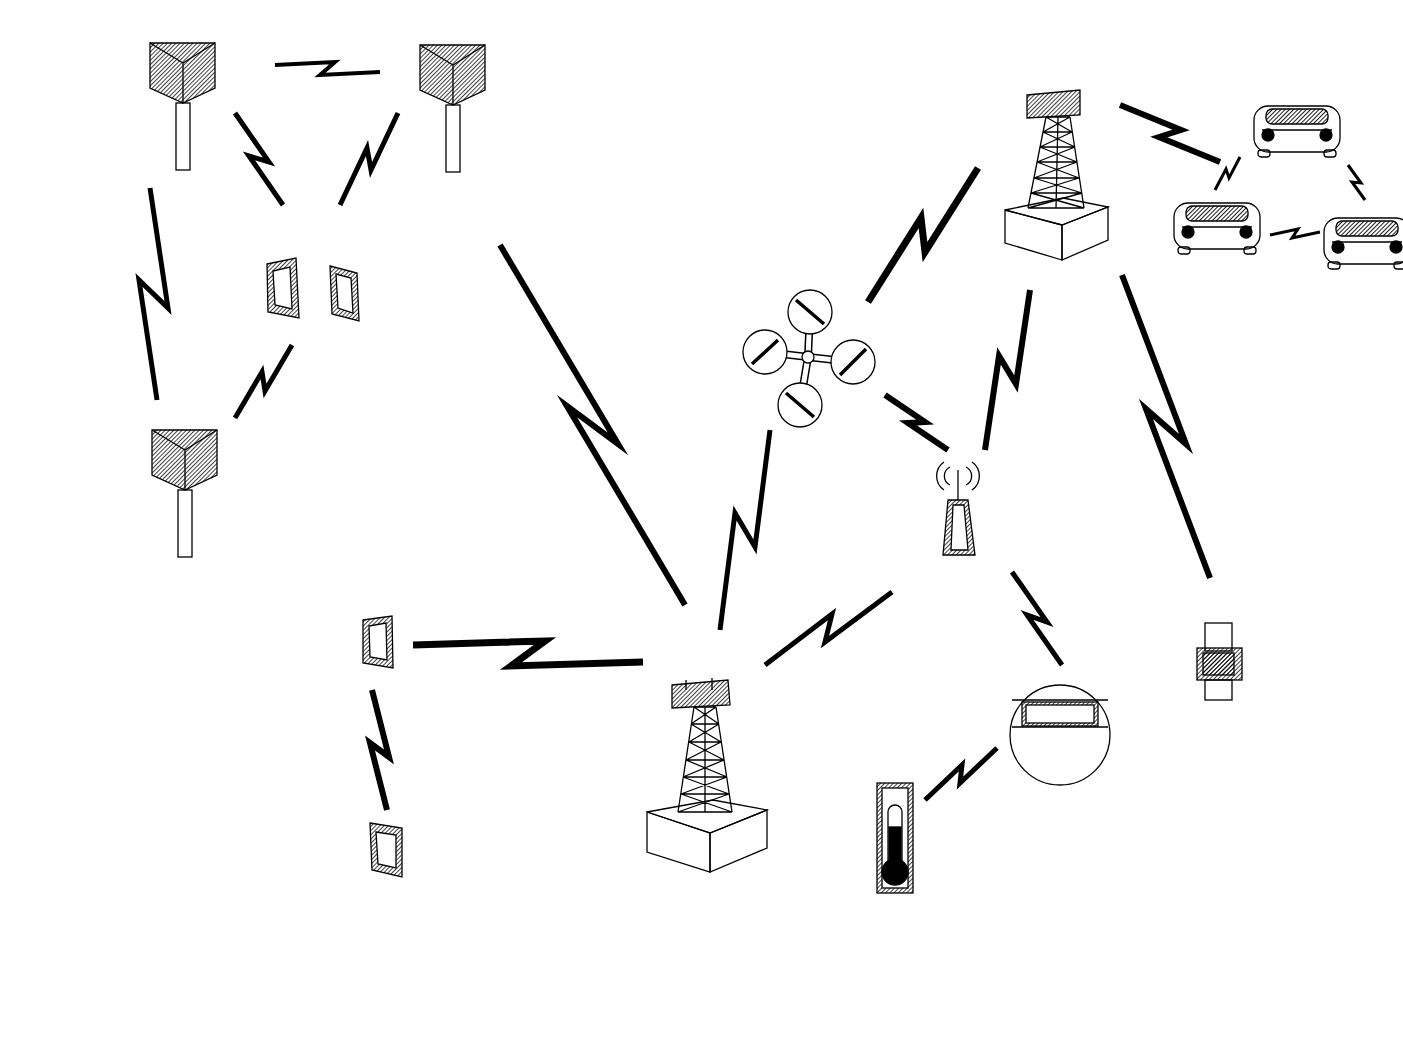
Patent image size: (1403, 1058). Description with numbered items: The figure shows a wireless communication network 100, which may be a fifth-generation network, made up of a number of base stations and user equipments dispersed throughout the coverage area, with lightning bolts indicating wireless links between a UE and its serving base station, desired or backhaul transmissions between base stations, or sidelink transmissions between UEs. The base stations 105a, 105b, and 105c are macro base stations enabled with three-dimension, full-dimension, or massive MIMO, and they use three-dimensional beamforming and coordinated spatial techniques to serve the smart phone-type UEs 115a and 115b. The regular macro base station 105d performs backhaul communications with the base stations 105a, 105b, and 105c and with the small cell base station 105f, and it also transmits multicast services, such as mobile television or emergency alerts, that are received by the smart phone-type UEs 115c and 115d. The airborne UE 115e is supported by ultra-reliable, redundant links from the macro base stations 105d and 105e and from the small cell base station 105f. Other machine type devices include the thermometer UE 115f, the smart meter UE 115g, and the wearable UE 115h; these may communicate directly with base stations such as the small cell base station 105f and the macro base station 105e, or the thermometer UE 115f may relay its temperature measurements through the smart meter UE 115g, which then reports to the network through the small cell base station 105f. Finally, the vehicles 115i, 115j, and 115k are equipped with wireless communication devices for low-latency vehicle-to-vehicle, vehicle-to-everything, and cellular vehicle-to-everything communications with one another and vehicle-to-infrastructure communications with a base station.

The wireless communication network 100 is at (744, 205).
The base station 105a is at (176, 150).
The base station 105b is at (458, 148).
The base station 105c is at (176, 550).
The macro base station 105d is at (662, 852).
The macro base station 105e is at (1020, 246).
The small cell base station 105f is at (946, 552).
The UE 115a is at (266, 276).
The UE 115b is at (360, 286).
The UE 115c is at (362, 625).
The UE 115d is at (405, 836).
The UE 115e is at (742, 348).
The UE 115f is at (913, 883).
The UE 115g is at (1095, 775).
The UE 115h is at (1232, 700).
The UE 115i is at (1315, 108).
The UE 115j is at (1396, 268).
The UE 115k is at (1196, 253).